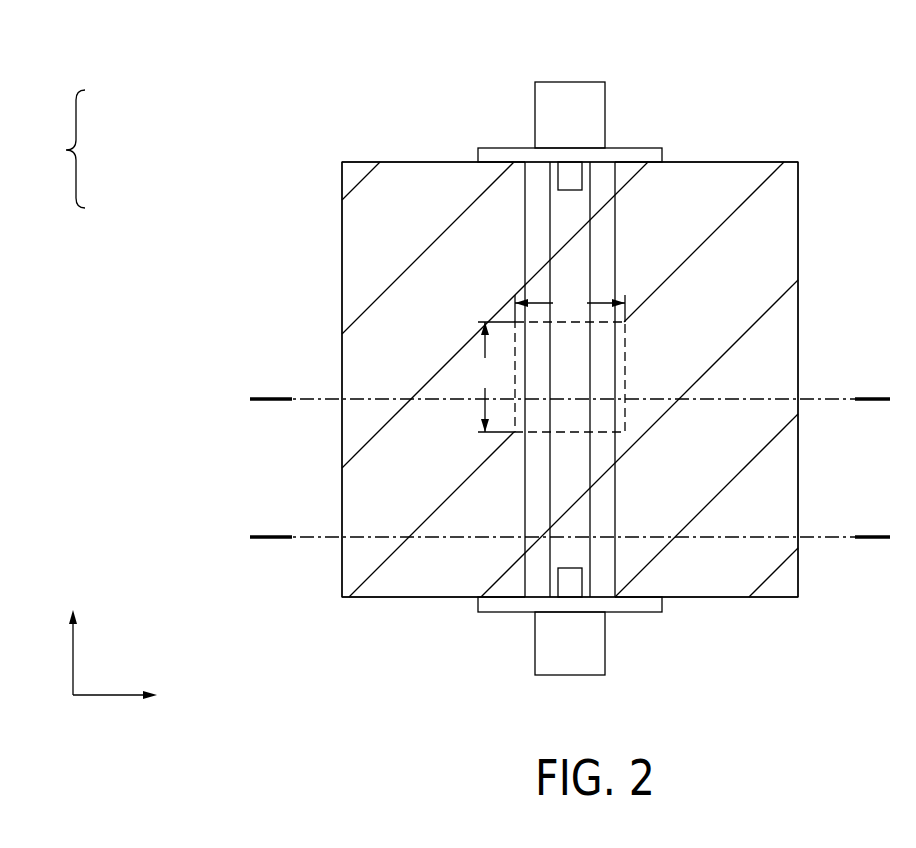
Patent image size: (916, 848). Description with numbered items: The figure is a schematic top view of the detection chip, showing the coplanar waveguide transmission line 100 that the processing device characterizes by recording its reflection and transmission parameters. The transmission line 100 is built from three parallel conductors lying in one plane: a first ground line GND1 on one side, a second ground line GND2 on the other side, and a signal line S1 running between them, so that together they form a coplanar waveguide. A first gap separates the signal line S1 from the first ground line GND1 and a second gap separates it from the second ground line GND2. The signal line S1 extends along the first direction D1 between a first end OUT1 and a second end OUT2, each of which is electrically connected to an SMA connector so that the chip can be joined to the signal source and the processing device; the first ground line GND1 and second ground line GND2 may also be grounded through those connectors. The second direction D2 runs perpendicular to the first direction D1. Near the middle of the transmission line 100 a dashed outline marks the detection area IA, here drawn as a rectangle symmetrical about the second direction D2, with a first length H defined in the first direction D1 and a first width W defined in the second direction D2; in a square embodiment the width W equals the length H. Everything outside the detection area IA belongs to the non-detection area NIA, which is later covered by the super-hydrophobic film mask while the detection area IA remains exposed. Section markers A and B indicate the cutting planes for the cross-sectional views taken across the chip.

The coplanar waveguide transmission line 100 is at (89, 149).
The first ground line GND1 is at (421, 162).
The second ground line GND2 is at (696, 162).
The signal line S1 is at (578, 251).
The first end OUT1 is at (570, 82).
The second end OUT2 is at (570, 675).
The non-detection area NIA is at (768, 162).
The detection area IA is at (627, 340).
The first width W is at (570, 303).
The first length H is at (495, 377).
The section line A- A is at (267, 385).
The section line B- B is at (267, 523).
The first direction D1 is at (78, 635).
The second direction D2 is at (133, 695).